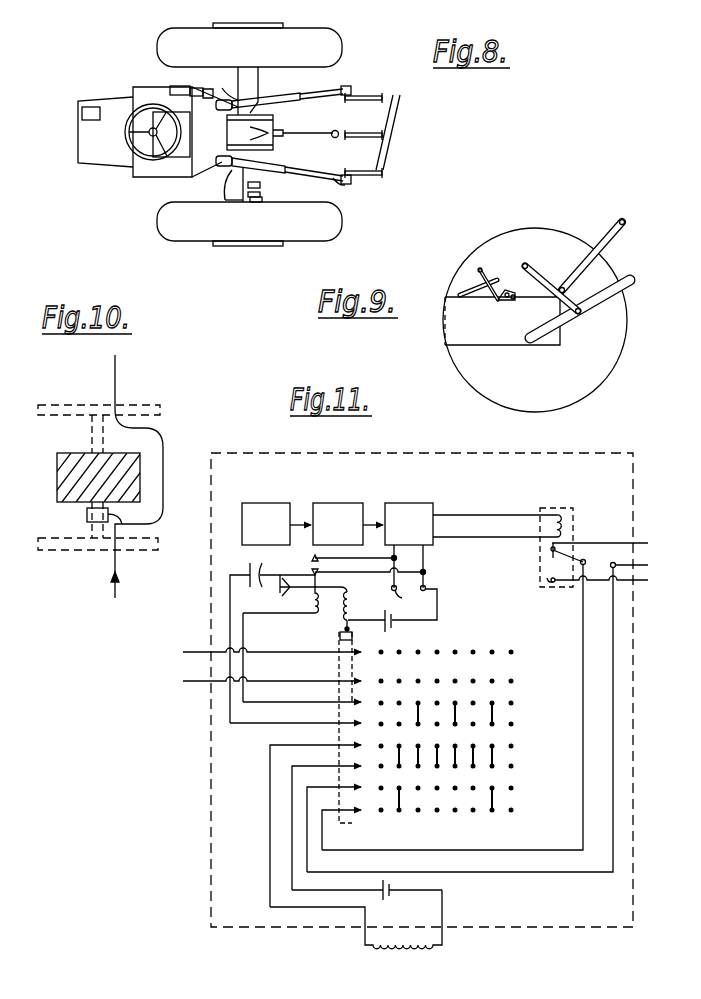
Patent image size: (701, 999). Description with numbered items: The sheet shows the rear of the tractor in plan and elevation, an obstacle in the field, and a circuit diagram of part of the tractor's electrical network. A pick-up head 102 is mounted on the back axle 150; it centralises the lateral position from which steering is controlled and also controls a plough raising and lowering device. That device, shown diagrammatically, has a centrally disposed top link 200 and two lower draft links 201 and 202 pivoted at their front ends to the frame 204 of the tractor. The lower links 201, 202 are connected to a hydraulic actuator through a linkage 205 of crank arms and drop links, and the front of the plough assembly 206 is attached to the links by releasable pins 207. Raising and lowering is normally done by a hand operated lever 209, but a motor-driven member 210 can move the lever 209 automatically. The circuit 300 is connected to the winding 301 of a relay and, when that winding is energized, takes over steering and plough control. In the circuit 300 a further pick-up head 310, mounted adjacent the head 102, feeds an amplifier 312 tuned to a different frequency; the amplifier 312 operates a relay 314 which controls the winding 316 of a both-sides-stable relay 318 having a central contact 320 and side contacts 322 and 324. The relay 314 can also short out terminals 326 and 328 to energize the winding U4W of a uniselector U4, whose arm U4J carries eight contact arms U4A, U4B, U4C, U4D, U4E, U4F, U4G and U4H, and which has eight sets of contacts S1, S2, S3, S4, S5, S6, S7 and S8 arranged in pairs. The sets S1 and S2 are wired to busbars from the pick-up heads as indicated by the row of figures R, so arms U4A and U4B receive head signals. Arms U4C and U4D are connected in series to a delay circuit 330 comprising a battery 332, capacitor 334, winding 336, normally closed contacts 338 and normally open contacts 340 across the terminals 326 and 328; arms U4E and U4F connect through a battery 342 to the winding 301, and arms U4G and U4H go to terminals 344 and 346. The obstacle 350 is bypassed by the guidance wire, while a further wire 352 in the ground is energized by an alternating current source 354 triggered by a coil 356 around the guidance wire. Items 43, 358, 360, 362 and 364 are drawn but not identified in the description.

In FIG. 8, the top link 200 is at (318, 135).
In FIG. 9, the top link 200 is at (601, 236).
In FIG. 8, the lower draft link 201 is at (335, 88).
In FIG. 8, the lower draft link 202 is at (334, 181).
In FIG. 9, the lower draft link 202 is at (604, 300).
In FIG. 9, the frame 204 is at (502, 321).
In FIG. 8, the linkage 205 is at (270, 167).
In FIG. 9, the linkage 205 is at (527, 266).
In FIG. 8, the plough assembly 206 is at (380, 97).
In FIG. 8, the releasable pins 207 is at (348, 104).
In FIG. 8, the hand operated lever 209 is at (230, 86).
In FIG. 9, the hand operated lever 209 is at (481, 268).
In FIG. 8, the member 210 is at (213, 92).
In FIG. 9, the member 210 is at (466, 283).
In FIG. 8, the back axle 150 is at (240, 192).
In FIG. 8, the pick-up head 102 is at (261, 191).
In FIG. 8, the further pick up head 310 is at (258, 199).
In FIG. 11, the further pick up head 310 is at (266, 524).
In FIG. 11, the amplifier 312 is at (338, 524).
In FIG. 11, the relay 314 is at (409, 524).
In FIG. 11, the winding 316 is at (567, 516).
In FIG. 11, the both-sides-stable relay 318 is at (568, 594).
In FIG. 11, the central contact 320 is at (550, 553).
In FIG. 11, the side contact 322 is at (570, 545).
In FIG. 11, the side contact 324 is at (549, 580).
In FIG. 11, the terminal 326 is at (396, 592).
In FIG. 11, the terminal 328 is at (426, 574).
In FIG. 11, the delay circuit 330 is at (240, 566).
In FIG. 11, the battery 332 is at (278, 562).
In FIG. 11, the capacitor 334 is at (279, 589).
In FIG. 11, the winding 336 is at (349, 607).
In FIG. 11, the normally closed contacts 338 is at (315, 611).
In FIG. 11, the normally open contacts 340 is at (312, 556).
In FIG. 11, the battery 342 is at (394, 893).
In FIG. 11, the terminal 344 is at (467, 698).
In FIG. 11, the terminal 346 is at (616, 562).
In FIG. 11, the circuit 300 is at (633, 900).
In FIG. 11, the winding 301 is at (436, 945).
In FIG. 10, the conductor 43 is at (115, 360).
In FIG. 10, the obstacle 350 is at (72, 453).
In FIG. 10, the further wire 352 is at (130, 552).
In FIG. 10, the source 354 is at (87, 515).
In FIG. 10, the coil 356 is at (116, 514).
In FIG. 10, the lead 358 is at (98, 548).
In FIG. 10, the lead 360 is at (132, 541).
In FIG. 10, the upper plate 362 is at (157, 417).
In FIG. 10, the bar 364 is at (160, 405).
In FIG. 11, the uniselector U4 is at (524, 646).
In FIG. 11, the contact arm U4A is at (272, 647).
In FIG. 11, the contact arm U4B is at (272, 675).
In FIG. 11, the contact arm U4C is at (302, 695).
In FIG. 11, the contact arm U4D is at (295, 717).
In FIG. 11, the contact arm U4E is at (299, 818).
In FIG. 11, the contact arm U4F is at (299, 821).
In FIG. 11, the contact arm U4G is at (298, 825).
In FIG. 11, the contact arm U4H is at (297, 824).
In FIG. 11, the arm U4J is at (351, 823).
In FIG. 11, the winding U4W is at (327, 644).
In FIG. 11, the row of figures R is at (533, 668).
In FIG. 11, the set of contacts S1 is at (533, 652).
In FIG. 11, the set of contacts S2 is at (533, 681).
In FIG. 11, the set of contacts S3 is at (533, 703).
In FIG. 11, the set of contacts S4 is at (533, 724).
In FIG. 11, the set of contacts S5 is at (533, 746).
In FIG. 11, the set of contacts S6 is at (533, 766).
In FIG. 11, the set of contacts S7 is at (533, 788).
In FIG. 11, the set of contacts S8 is at (533, 810).